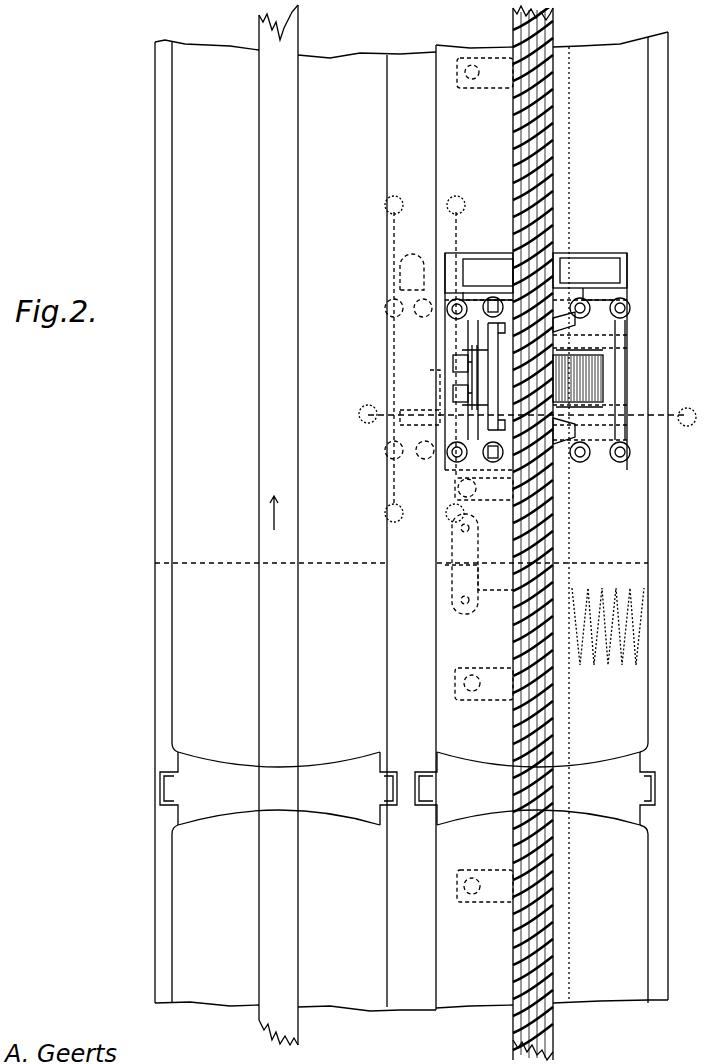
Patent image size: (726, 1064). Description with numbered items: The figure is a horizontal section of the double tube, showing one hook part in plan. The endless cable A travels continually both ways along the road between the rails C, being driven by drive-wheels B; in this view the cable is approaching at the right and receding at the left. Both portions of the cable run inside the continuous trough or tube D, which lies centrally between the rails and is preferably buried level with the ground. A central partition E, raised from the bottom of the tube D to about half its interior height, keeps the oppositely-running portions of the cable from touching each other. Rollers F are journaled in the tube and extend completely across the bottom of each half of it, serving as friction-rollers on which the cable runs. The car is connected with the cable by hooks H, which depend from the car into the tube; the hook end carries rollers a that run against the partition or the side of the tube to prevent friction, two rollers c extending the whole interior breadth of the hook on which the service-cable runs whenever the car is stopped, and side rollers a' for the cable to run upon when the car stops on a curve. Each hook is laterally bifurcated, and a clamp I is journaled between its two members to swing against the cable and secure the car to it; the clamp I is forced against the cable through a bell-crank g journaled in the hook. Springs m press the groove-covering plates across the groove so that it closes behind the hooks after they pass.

The endless cable A is at (508, 735).
The central partition E is at (401, 528).
The rollers F is at (407, 788).
The tube D is at (140, 505).
The springs m is at (632, 626).
The rollers a is at (539, 374).
The side rollers a' is at (543, 383).
The rollers c is at (499, 379).
The bell-crank g is at (471, 377).
The hooks H is at (536, 361).
The clamp I is at (578, 378).
The drive-wheels B is at (527, 415).
The rails C is at (425, 359).